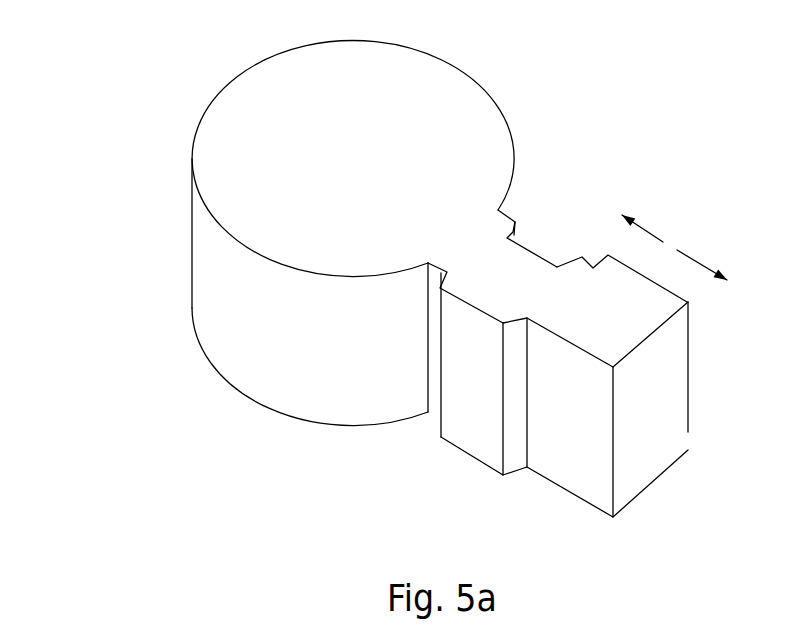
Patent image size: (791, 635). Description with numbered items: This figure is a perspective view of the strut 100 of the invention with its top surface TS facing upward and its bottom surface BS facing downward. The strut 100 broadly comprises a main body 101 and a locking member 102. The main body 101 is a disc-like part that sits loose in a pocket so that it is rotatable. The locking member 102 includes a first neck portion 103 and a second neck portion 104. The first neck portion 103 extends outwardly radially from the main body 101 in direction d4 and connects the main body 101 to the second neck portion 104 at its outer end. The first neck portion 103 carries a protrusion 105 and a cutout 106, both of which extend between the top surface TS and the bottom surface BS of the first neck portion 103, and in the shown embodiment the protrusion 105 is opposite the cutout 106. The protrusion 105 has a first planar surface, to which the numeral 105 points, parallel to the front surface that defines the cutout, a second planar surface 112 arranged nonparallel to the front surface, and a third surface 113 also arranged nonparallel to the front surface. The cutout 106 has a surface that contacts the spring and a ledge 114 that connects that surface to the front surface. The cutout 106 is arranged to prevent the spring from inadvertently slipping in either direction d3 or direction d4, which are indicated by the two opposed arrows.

The strut 100 is at (398, 306).
The main body 101 is at (318, 231).
The locking member 102 is at (529, 352).
The first neck portion 103 is at (528, 297).
The second neck portion 104 is at (630, 325).
The protrusion 105 is at (470, 423).
The cutout 106 is at (552, 247).
The second planar surface 112 is at (443, 407).
The third surface 113 is at (517, 443).
The ledge 114 is at (585, 243).
The top surface TS is at (273, 177).
The bottom surface BS is at (268, 405).
The direction d3 is at (648, 232).
The direction d4 is at (700, 265).